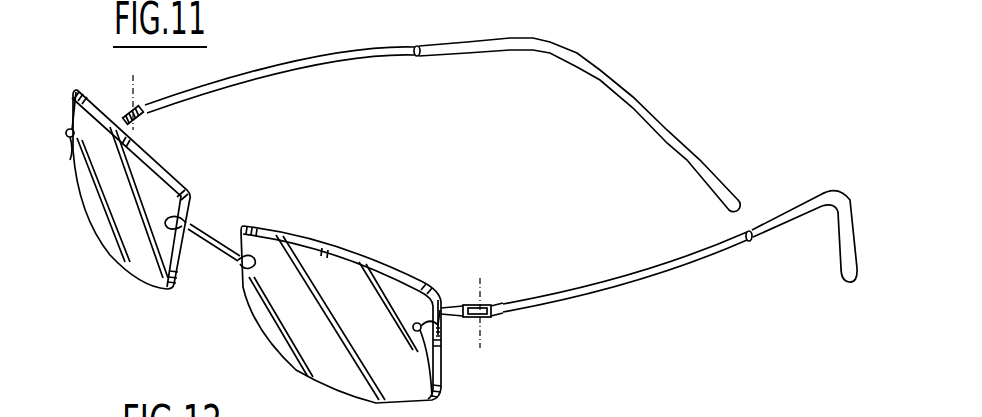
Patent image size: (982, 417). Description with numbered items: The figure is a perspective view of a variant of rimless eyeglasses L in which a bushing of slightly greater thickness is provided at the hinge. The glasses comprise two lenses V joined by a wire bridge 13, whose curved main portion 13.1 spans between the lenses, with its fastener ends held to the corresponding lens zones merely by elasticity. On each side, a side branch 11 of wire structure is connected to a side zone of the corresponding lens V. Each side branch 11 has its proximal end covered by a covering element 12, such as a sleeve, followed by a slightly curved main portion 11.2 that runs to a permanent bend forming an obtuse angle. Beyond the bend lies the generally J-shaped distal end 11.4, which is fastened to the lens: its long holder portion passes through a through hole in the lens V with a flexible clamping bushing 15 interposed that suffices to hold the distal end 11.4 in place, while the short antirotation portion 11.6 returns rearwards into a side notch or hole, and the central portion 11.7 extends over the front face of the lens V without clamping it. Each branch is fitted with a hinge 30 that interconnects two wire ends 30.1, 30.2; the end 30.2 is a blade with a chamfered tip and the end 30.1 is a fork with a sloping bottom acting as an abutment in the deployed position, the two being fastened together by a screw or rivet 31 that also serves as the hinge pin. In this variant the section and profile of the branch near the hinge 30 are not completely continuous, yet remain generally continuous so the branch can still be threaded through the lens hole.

The side branch 11 is at (501, 184).
The main portion 11.2 is at (501, 184).
The distal end 11.4 is at (63, 120).
The short antirotation portion 11.6 is at (440, 342).
The central portion 11.7 is at (70, 160).
The covering element 12 is at (645, 110).
The bridge 13 is at (208, 257).
The curved main portion 13.1 is at (204, 224).
The flexible clamping bushing 15 is at (90, 142).
The hinge 30 is at (121, 99).
The wire end 30.1 is at (474, 318).
The wire end 30.2 is at (490, 318).
The screw or rivet 31 is at (142, 112).
The lens V is at (128, 245).
The eyeglasses L is at (722, 140).